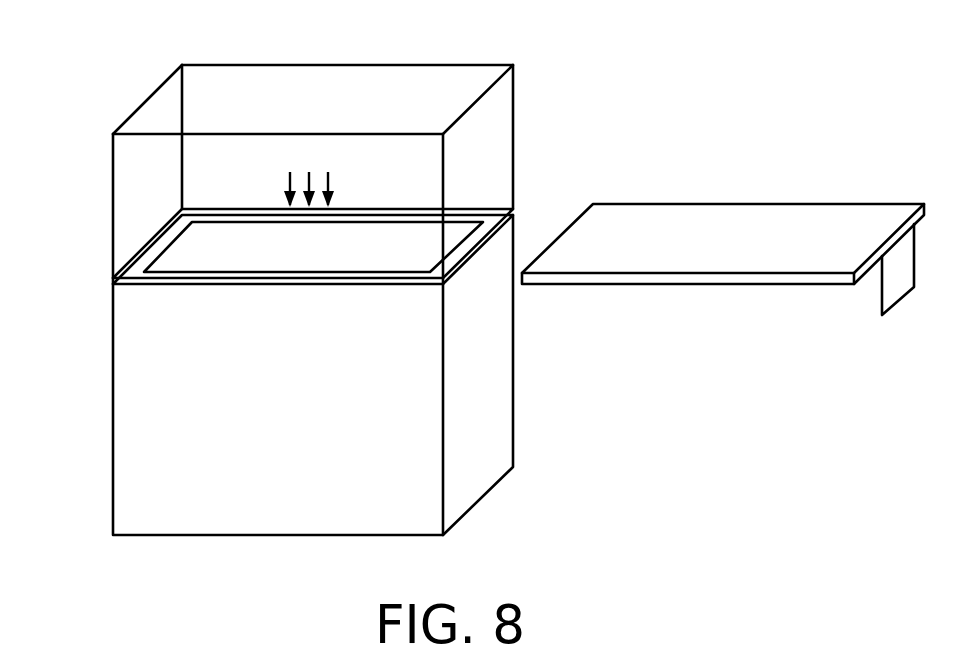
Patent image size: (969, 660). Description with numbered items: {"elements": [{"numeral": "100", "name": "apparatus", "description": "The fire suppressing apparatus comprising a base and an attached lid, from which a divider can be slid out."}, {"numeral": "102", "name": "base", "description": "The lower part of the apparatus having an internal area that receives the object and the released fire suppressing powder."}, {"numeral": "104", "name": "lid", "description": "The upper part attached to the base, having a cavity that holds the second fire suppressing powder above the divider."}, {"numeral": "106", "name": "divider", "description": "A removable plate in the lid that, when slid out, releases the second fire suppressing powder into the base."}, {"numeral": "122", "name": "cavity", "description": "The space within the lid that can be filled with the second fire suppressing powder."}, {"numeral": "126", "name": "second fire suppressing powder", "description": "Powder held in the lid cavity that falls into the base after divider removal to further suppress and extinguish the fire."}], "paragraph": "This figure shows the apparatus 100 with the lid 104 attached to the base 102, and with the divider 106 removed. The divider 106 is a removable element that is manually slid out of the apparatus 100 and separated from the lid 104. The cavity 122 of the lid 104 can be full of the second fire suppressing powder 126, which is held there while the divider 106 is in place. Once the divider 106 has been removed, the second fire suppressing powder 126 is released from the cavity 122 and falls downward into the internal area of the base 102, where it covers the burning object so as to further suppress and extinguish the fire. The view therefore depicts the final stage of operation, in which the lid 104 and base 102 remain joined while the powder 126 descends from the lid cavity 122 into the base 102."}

The vaporizer / heating system 100 is at (133, 75).
The lower housing 102 is at (472, 395).
The upper housing 104 is at (492, 157).
The closure / lid plate 106 is at (810, 212).
The frame / rim 122 is at (320, 209).
The opening in frame 126 is at (398, 253).